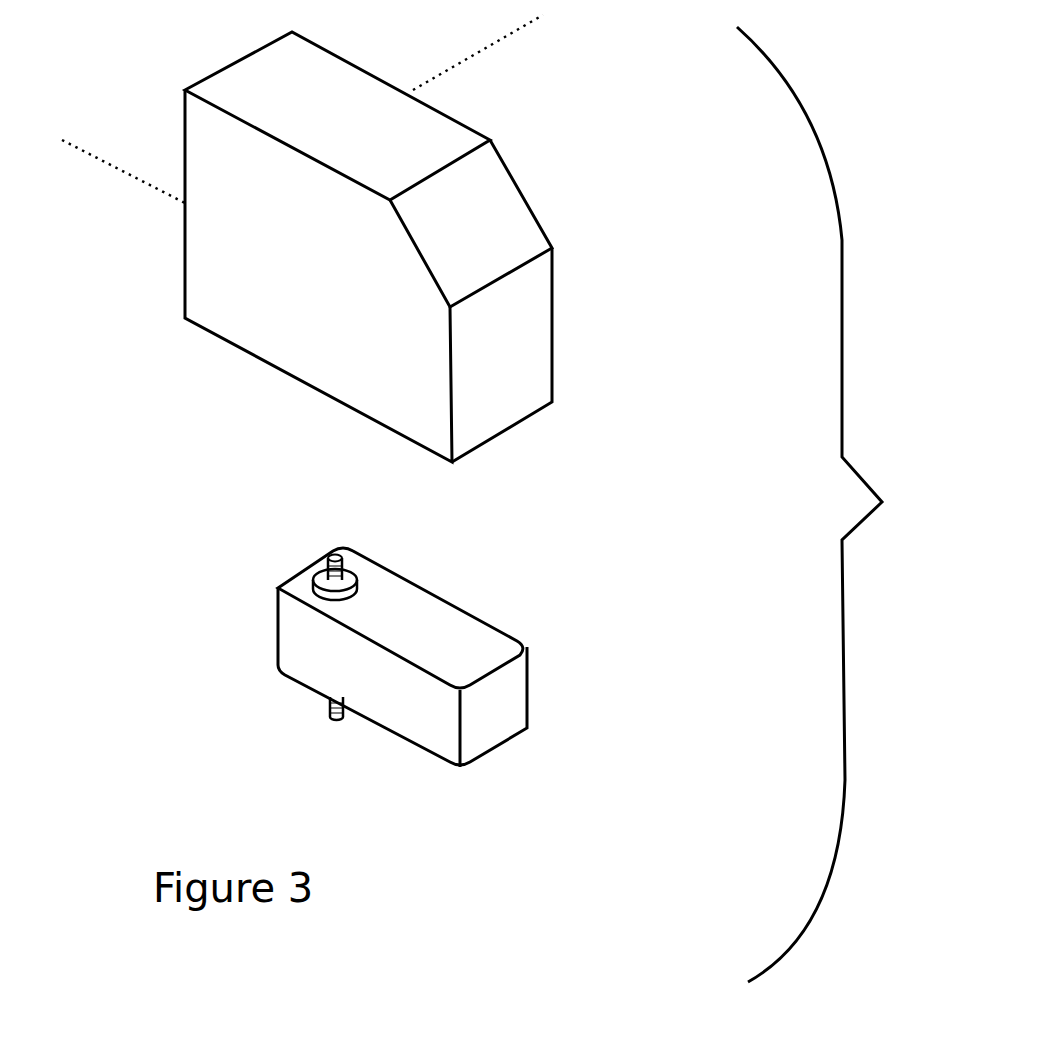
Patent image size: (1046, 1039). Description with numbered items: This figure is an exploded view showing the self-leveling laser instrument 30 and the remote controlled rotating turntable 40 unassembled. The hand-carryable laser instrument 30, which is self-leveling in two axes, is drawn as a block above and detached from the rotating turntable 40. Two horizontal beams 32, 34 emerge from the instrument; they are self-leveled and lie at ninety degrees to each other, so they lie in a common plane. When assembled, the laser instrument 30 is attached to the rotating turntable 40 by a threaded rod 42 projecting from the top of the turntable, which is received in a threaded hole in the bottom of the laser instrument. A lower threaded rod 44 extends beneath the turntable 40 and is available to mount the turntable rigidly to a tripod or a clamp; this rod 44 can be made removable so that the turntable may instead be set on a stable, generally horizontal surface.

The self-leveling laser instrument 30 is at (552, 402).
The horizontal beam 32 is at (477, 55).
The horizontal beam 34 is at (97, 157).
The rotating turntable 40 is at (525, 730).
The threaded rod 42 is at (352, 576).
The lower threaded rod 44 is at (337, 720).